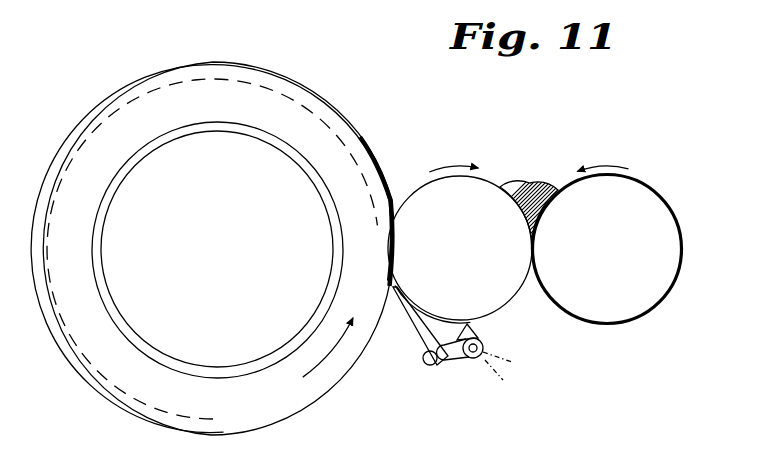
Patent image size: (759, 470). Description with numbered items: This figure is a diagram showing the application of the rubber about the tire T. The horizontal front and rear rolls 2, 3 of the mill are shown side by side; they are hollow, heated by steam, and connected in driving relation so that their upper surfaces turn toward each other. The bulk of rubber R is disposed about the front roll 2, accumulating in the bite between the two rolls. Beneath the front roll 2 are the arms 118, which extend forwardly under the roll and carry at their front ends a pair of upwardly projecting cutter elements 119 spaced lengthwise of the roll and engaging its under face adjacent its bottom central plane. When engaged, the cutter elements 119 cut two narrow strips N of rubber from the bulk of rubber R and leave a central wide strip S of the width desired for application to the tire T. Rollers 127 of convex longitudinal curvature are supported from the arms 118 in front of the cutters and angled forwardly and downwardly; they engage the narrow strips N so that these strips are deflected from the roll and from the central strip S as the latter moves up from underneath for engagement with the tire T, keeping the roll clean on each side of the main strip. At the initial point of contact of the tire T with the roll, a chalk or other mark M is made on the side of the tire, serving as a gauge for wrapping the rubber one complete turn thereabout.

The printing drum T is at (180, 388).
The central wide strip S is at (360, 136).
The mark M is at (224, 430).
The front roll 2 is at (415, 205).
The rear roll 3 is at (618, 303).
The bulk of rubber R is at (527, 185).
The narrow strips N is at (417, 332).
The rollers 127 is at (424, 363).
The arms 118 is at (483, 360).
The cutter elements 119 is at (474, 333).